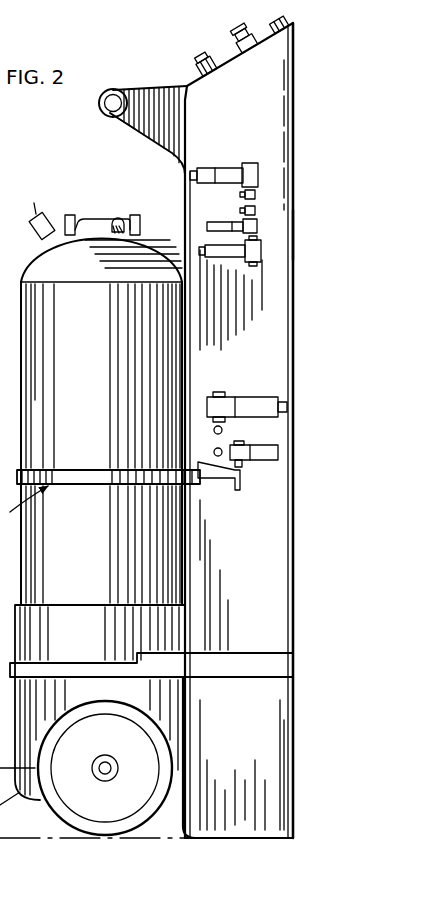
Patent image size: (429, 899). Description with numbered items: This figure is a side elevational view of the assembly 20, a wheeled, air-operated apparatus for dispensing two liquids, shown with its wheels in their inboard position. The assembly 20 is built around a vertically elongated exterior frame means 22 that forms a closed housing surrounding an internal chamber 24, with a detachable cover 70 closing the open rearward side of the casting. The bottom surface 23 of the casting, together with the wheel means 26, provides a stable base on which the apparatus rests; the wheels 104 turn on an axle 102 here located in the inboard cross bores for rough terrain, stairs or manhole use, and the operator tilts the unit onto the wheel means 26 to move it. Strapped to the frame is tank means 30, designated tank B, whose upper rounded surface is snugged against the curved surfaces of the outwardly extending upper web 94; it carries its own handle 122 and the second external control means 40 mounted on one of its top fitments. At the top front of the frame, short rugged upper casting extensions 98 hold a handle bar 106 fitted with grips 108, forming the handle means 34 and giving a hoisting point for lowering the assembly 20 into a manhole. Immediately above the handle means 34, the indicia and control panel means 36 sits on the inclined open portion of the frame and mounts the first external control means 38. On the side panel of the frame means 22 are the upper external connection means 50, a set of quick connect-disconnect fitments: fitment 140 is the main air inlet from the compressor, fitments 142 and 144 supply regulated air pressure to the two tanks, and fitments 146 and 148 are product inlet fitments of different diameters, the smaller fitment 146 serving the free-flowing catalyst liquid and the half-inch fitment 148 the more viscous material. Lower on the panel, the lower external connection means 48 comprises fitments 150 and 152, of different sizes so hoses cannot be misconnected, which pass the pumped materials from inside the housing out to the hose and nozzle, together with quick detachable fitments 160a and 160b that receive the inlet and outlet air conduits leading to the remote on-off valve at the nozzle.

The assembly 20 is at (300, 655).
The exterior frame means 22 is at (272, 608).
The bottom surface 23 is at (211, 843).
The internal chamber 24 is at (92, 868).
The wheel means 26 is at (101, 841).
The B tank means 30 is at (150, 549).
The handle means 34 is at (112, 124).
The indicia and control panel means 36 is at (240, 50).
The first external control means 38 is at (200, 62).
The second external control means 40 is at (141, 212).
The lower external connection means 48 is at (320, 438).
The upper external connection means 50 is at (297, 232).
The detachable cover 70 is at (295, 532).
The upper web 94 is at (190, 382).
The upper casting extensions 98 is at (173, 118).
The axle 102 is at (112, 766).
The wheels 104 is at (160, 787).
The handle bar 106 is at (107, 112).
The grips 108 is at (99, 100).
The handle 122 is at (47, 219).
The fitment 140 is at (243, 165).
The fitment 142 is at (255, 195).
The fitment 144 is at (255, 211).
The fitment 146 is at (257, 226).
The fitment 148 is at (261, 252).
The fitment 150 is at (287, 398).
The fitment 152 is at (278, 455).
The quick detachable fitment 160a is at (214, 430).
The quick detachable fitment 160b is at (214, 452).
The tank B is at (106, 547).